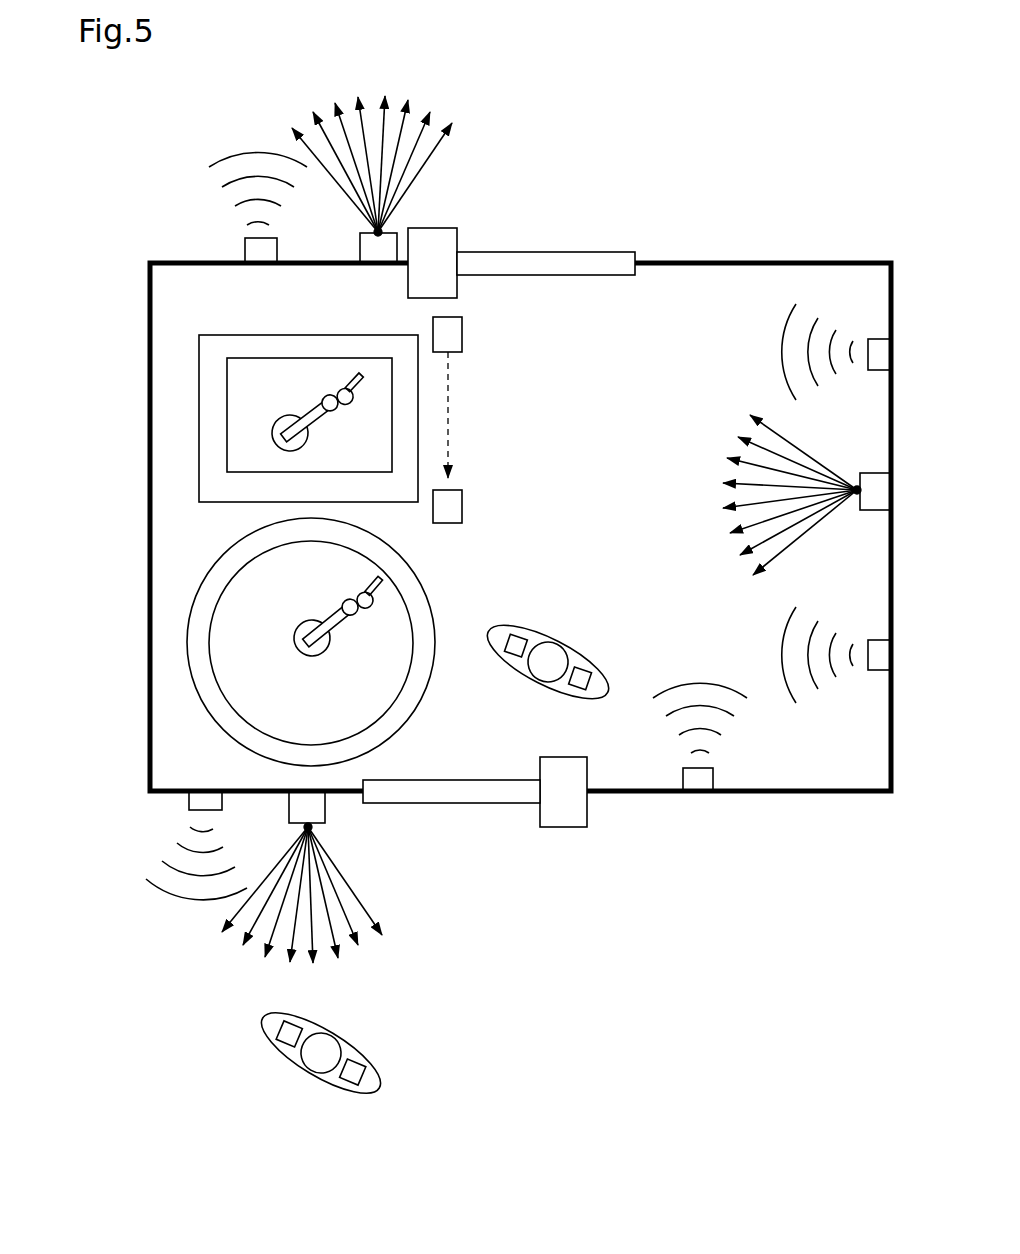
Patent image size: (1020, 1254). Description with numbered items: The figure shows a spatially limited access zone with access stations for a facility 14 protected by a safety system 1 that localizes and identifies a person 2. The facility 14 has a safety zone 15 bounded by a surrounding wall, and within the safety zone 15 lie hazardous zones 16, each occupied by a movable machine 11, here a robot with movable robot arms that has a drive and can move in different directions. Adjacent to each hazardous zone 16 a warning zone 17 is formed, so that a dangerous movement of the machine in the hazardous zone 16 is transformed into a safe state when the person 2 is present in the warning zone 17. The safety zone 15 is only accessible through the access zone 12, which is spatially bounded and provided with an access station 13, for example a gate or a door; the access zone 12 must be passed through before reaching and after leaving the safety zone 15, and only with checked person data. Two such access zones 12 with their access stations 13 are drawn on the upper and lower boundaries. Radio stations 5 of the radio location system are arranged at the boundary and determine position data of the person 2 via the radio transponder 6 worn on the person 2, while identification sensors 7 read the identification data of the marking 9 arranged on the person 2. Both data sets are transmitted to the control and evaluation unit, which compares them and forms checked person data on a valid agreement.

The safety system 1 is at (705, 117).
The person 2 is at (600, 685).
The radio station 5 is at (247, 250).
The radio transponder 6 is at (582, 670).
The identification sensor 7 is at (368, 248).
The marking 9 is at (520, 635).
The movable machine 11 is at (307, 400).
The access zone 12 is at (552, 262).
The access station 13 is at (433, 242).
The facility 14 is at (772, 177).
The safety zone 15 is at (173, 297).
The hazardous zone 16 is at (223, 448).
The warning zone 17 is at (198, 387).